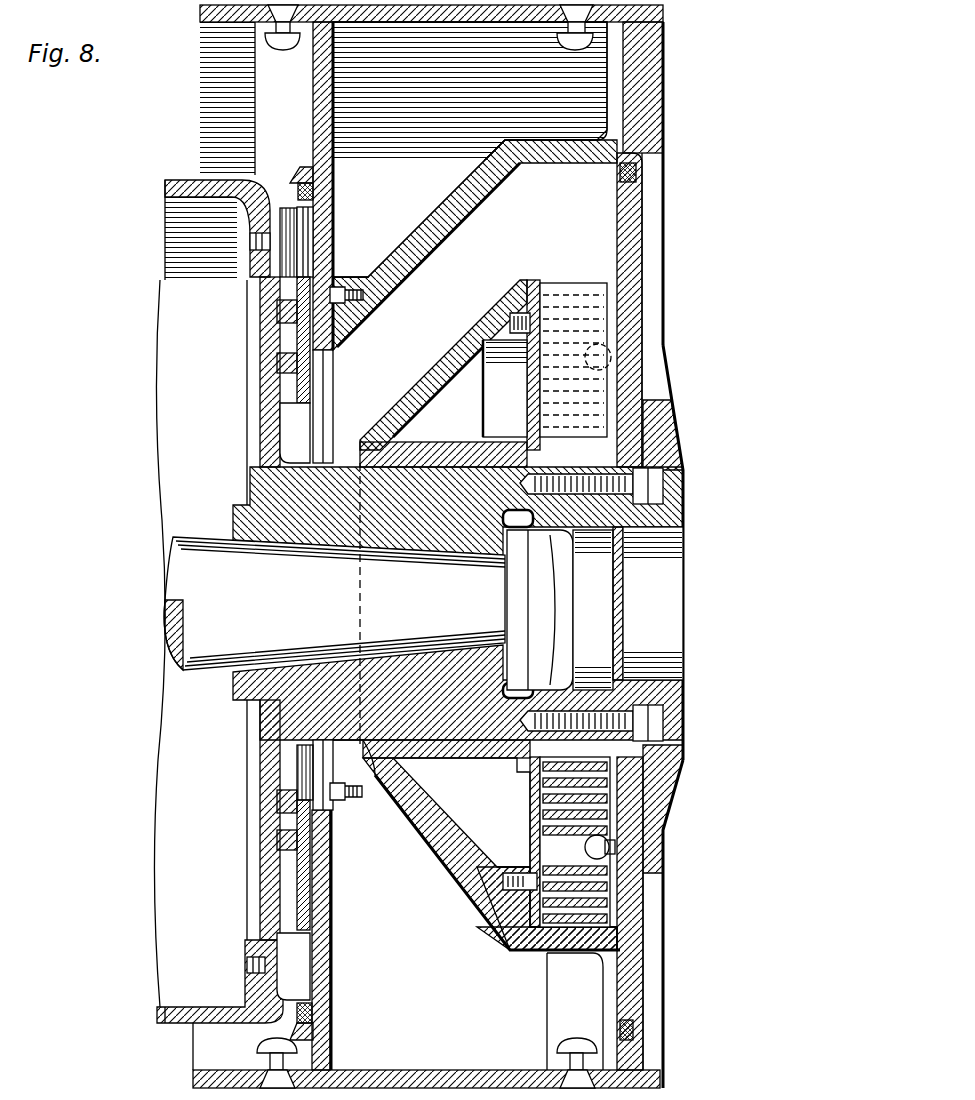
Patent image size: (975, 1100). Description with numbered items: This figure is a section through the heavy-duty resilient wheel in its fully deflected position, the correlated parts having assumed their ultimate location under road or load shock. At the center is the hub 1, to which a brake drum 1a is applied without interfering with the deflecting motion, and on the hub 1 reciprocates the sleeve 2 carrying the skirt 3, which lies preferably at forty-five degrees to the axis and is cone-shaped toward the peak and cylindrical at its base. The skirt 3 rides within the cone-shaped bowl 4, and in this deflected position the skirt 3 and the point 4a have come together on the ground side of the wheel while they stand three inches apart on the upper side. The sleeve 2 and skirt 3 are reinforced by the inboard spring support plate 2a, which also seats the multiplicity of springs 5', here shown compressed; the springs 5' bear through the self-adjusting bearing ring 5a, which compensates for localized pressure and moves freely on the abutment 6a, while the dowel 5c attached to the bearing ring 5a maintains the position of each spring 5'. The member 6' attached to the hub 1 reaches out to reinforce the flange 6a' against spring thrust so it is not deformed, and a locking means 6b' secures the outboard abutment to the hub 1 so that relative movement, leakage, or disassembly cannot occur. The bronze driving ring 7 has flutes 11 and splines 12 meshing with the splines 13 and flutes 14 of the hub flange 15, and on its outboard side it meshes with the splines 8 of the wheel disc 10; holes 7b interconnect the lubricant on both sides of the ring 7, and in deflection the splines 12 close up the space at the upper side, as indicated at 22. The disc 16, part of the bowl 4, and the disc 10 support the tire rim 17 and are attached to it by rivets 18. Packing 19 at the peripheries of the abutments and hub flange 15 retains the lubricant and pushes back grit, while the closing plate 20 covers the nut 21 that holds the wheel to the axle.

The hub 1 is at (233, 683).
The brake drum 1a is at (260, 977).
The sleeve 2 is at (470, 453).
The inboard spring support plate 2a is at (530, 412).
The skirt 3 is at (520, 282).
The cone-shaped bowl 4 is at (427, 247).
The point on the bowl 4a is at (527, 950).
The springs 5' is at (575, 616).
The self-adjusting bearing ring 5a is at (623, 308).
The dowel 5c is at (583, 357).
The reinforcing member 6' is at (693, 552).
The hub nut flange or abutment 6a is at (688, 244).
The flange 6a' is at (690, 916).
The locking means 6b' is at (641, 610).
The driving ring 7 is at (307, 420).
The holes 7b is at (315, 826).
The splines 8 is at (218, 770).
The wheel disc 10 is at (327, 238).
The flutes 11 is at (297, 313).
The splines 12 is at (290, 353).
The splines 13 is at (310, 393).
The flutes 14 is at (337, 363).
The hub flange 15 is at (290, 177).
The disc 16 is at (623, 103).
The tire rim or band 17 is at (660, 13).
The rivets 18 is at (260, 1040).
The packing 19 is at (637, 175).
The closing plate 20 is at (623, 640).
The nut 21 is at (563, 598).
The closed space 22 is at (297, 213).